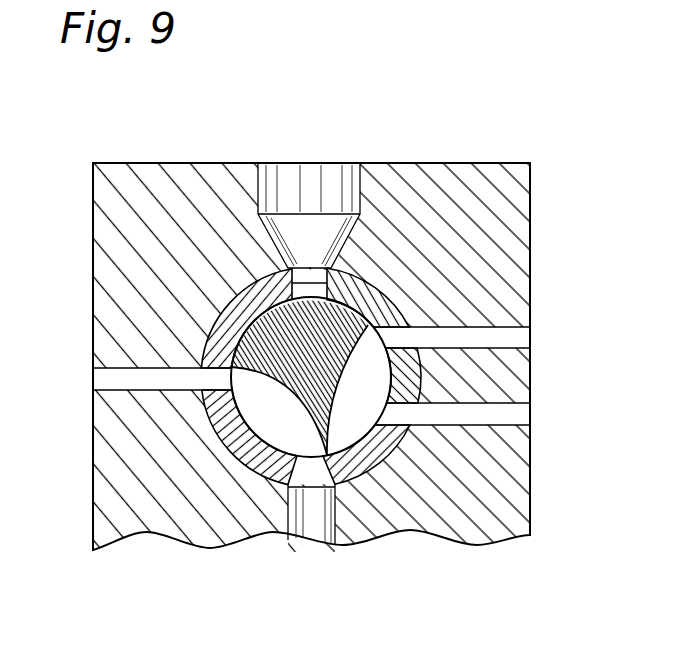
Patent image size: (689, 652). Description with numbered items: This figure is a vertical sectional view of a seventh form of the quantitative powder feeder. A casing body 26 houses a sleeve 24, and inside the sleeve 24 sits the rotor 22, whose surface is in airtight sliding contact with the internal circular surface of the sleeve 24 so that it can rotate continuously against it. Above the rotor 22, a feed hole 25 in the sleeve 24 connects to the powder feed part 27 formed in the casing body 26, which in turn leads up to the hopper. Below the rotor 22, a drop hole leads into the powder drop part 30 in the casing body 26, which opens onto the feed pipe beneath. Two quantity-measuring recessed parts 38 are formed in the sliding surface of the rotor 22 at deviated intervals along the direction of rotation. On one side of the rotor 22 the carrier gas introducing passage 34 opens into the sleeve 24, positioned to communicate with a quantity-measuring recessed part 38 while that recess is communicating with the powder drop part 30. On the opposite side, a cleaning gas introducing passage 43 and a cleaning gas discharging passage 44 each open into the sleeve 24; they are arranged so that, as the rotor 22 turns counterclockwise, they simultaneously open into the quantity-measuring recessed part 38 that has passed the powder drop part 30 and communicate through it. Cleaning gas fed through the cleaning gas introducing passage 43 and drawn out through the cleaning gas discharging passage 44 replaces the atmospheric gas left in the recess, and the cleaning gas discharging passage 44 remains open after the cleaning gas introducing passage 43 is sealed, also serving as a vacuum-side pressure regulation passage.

The rotor 22 is at (375, 300).
The sleeve 24 is at (367, 287).
The feed hole 25 is at (292, 292).
The casing body 26 is at (441, 192).
The powder feed part 27 is at (307, 176).
The powder drop part 30 is at (313, 521).
The carrier gas introducing passage 34 is at (172, 367).
The quantity-measuring recessed part 38 is at (265, 411).
The cleaning gas introducing passage 43 is at (447, 437).
The cleaning gas discharging passage 44 is at (447, 360).